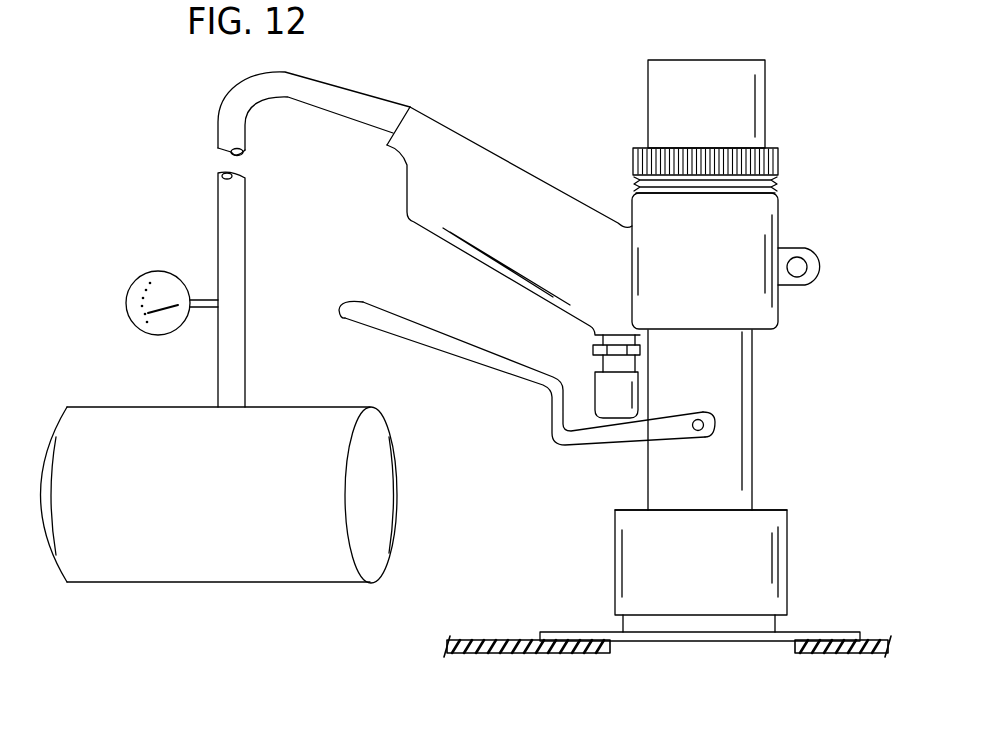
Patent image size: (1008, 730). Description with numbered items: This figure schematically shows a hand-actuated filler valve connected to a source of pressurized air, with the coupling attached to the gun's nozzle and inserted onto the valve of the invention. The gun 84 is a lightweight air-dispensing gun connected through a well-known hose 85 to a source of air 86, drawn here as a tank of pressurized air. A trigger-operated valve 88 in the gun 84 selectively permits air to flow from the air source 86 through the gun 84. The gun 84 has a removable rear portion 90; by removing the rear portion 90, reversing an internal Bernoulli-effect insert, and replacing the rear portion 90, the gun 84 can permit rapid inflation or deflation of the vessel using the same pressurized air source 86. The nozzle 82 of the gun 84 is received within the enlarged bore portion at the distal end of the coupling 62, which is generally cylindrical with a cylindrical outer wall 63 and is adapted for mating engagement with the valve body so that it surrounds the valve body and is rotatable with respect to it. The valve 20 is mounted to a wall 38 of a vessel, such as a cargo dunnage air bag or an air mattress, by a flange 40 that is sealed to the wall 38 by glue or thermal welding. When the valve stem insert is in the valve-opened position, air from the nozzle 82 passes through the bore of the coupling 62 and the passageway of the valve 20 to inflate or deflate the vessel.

The valve 20 is at (793, 620).
The wall 38 is at (522, 648).
The flange 40 is at (829, 634).
The coupling 62 is at (753, 521).
The cylindrical outer wall 63 is at (635, 518).
The nozzle 82 is at (730, 464).
The gun 84 is at (783, 340).
The hose 85 is at (289, 95).
The source of air 86 is at (222, 571).
The trigger-operated valve 88 is at (577, 360).
The rear portion 90 is at (765, 113).